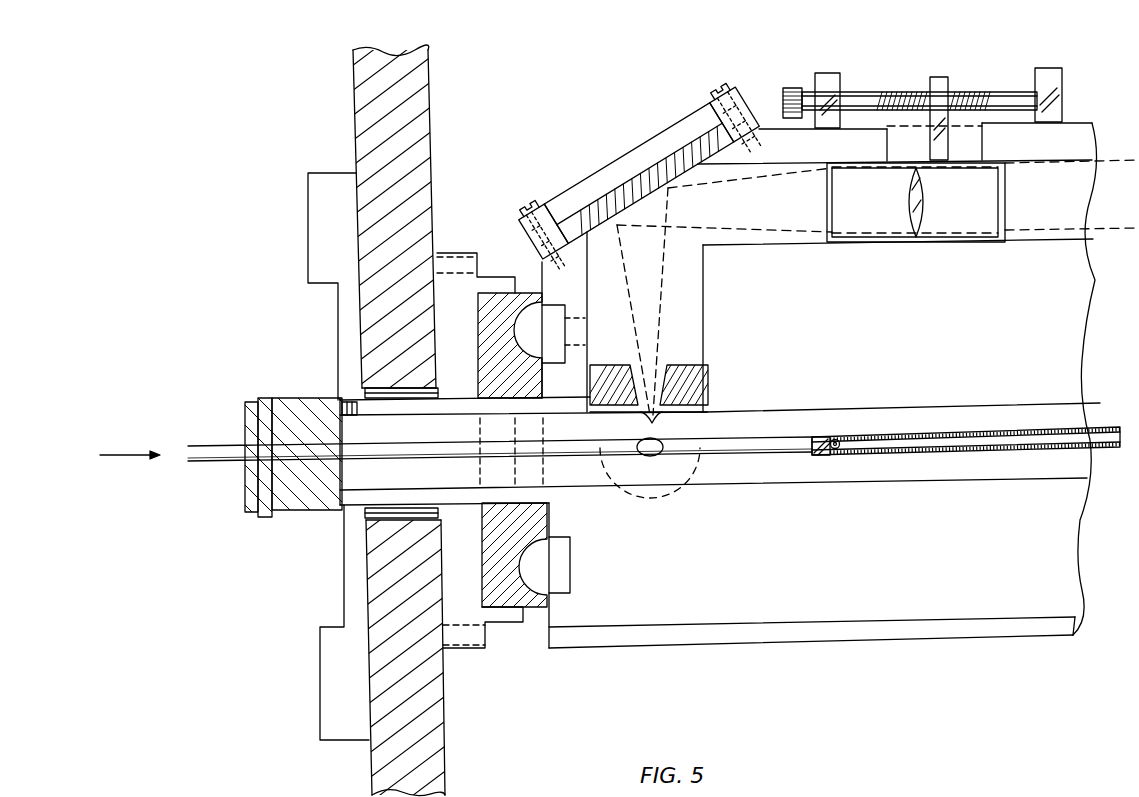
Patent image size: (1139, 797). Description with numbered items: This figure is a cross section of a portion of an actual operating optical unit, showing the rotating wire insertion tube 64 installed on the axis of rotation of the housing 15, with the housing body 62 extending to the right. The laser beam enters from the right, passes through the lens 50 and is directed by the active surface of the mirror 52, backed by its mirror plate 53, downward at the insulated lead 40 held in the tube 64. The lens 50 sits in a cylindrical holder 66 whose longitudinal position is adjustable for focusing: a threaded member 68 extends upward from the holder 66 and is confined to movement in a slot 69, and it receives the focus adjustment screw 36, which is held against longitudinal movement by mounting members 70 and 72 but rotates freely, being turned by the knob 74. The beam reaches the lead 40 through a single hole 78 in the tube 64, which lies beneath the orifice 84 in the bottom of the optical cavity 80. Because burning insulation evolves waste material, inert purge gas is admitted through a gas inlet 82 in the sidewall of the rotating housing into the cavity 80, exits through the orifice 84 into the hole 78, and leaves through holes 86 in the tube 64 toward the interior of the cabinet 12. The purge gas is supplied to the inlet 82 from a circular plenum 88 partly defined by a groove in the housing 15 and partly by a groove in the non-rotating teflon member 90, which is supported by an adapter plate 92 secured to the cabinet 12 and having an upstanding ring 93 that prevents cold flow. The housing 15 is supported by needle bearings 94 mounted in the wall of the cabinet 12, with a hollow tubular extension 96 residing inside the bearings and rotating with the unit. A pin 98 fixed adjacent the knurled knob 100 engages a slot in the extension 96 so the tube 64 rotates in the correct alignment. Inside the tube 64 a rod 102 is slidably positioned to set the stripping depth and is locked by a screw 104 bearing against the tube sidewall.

The cabinet 12 is at (418, 87).
The housing 15 is at (1062, 570).
The focus adjustment screw 36 is at (973, 93).
The insulated lead 40 is at (223, 450).
The lens 50 is at (923, 212).
The mirror 52 is at (678, 158).
The mirror 53 is at (600, 188).
The housing 62 is at (945, 628).
The wire insertion tube 64 is at (585, 481).
The cylindrical holder 66 is at (992, 237).
The member 68 is at (937, 80).
The slot 69 is at (975, 140).
The mounting member 70 is at (828, 80).
The mounting member 72 is at (1053, 80).
The knob 74 is at (792, 84).
The hole 78 is at (660, 418).
The optical cavity 80 is at (690, 287).
The gas inlet 82 is at (577, 328).
The orifice 84 is at (663, 382).
The holes 86 is at (672, 480).
The plenum 88 is at (557, 575).
The circular member 90 is at (540, 597).
The adapter plate 92 is at (460, 615).
The upstanding ring 93 is at (497, 290).
The needle bearings 94 is at (365, 520).
The tubular member 96 is at (368, 500).
The pin 98 is at (340, 399).
The knurled knob 100 is at (293, 410).
The rod 102 is at (965, 440).
The screw 104 is at (836, 439).